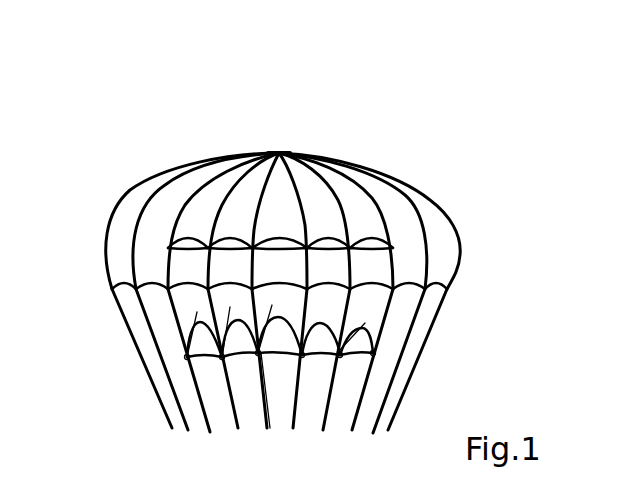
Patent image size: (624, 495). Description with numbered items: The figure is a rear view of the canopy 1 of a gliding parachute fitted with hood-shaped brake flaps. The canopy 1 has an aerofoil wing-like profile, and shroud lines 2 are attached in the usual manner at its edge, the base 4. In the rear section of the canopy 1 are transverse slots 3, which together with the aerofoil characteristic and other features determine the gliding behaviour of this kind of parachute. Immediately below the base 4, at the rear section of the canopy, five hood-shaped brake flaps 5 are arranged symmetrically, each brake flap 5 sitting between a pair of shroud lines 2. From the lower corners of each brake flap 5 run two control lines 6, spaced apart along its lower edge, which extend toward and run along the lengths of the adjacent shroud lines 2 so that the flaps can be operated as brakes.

The canopy 1 is at (133, 206).
The shroud lines 2 is at (160, 350).
The transverse slots 3 is at (373, 245).
The base 4 is at (440, 289).
The hood-shaped brake flaps 5 is at (258, 353).
The control lines 6 is at (268, 408).